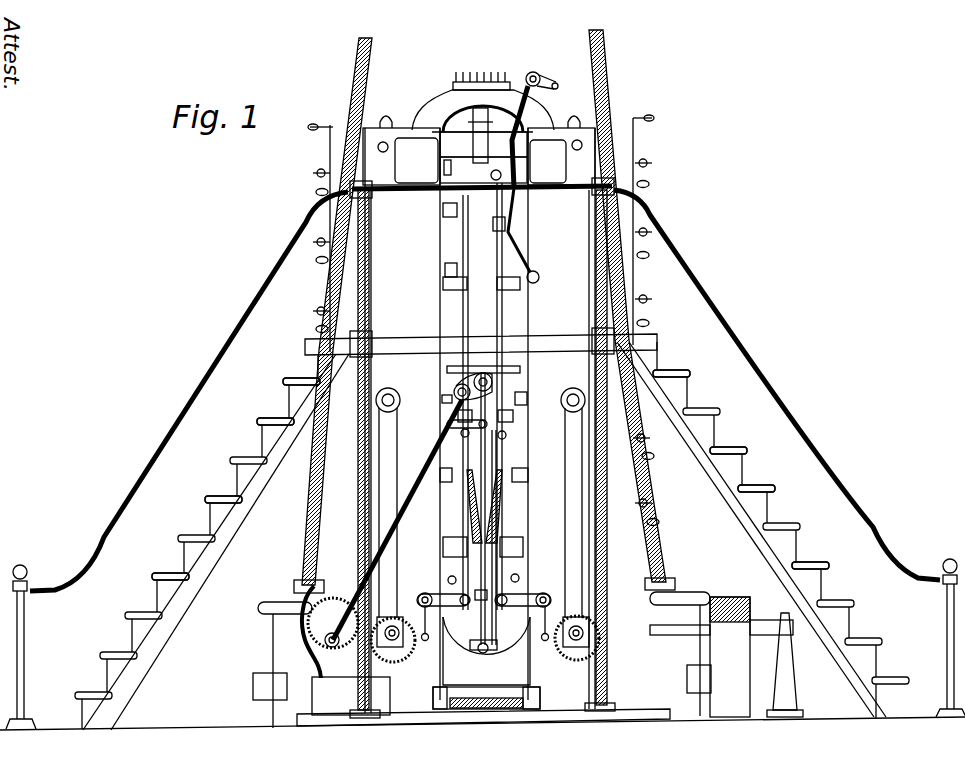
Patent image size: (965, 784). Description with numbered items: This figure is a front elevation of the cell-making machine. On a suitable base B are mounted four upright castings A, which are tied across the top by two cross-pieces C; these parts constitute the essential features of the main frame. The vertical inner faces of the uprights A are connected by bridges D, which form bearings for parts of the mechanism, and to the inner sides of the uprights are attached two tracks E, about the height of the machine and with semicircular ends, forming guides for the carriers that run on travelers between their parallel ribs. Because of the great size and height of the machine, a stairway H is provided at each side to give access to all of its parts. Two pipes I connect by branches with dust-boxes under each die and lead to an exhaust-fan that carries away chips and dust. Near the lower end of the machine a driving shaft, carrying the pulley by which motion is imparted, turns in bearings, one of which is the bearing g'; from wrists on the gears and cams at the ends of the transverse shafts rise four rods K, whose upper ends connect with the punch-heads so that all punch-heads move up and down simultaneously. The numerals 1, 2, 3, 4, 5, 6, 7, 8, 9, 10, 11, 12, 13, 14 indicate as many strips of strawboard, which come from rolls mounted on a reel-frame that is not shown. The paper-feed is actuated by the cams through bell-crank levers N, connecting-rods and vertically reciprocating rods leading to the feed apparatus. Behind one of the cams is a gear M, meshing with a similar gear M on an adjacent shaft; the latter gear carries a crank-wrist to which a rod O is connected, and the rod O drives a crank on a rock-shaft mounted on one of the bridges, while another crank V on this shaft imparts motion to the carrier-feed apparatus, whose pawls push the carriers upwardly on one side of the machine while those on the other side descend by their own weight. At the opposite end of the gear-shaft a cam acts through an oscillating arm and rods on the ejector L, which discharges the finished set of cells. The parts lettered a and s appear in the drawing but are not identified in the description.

The strip of strawboard 1 is at (740, 560).
The strip of strawboard 2 is at (705, 499).
The strip of strawboard 3 is at (700, 432).
The strip of strawboard 4 is at (655, 368).
The strip of strawboard 5 is at (648, 299).
The strip of strawboard 6 is at (648, 232).
The strip of strawboard 7 is at (648, 162).
The strip of strawboard 8 is at (316, 167).
The strip of strawboard 9 is at (316, 236).
The strip of strawboard 10 is at (316, 305).
The strip of strawboard 11 is at (316, 374).
The strip of strawboard 12 is at (316, 437).
The strip of strawboard 13 is at (316, 507).
The strip of strawboard 14 is at (300, 567).
The upright casting A is at (482, 423).
The base B is at (483, 707).
The cross-piece C is at (479, 148).
The bridge D is at (494, 258).
The track E is at (482, 117).
The stairway H is at (492, 535).
The pipe I is at (484, 311).
The rod K is at (482, 517).
The ejector L is at (486, 663).
The gear M is at (450, 646).
The bell-crank lever N is at (495, 418).
The rod O is at (438, 406).
The crank V is at (537, 168).
The shaft bearing a is at (523, 660).
The bearing g' is at (789, 665).
The fitting rod s is at (483, 320).